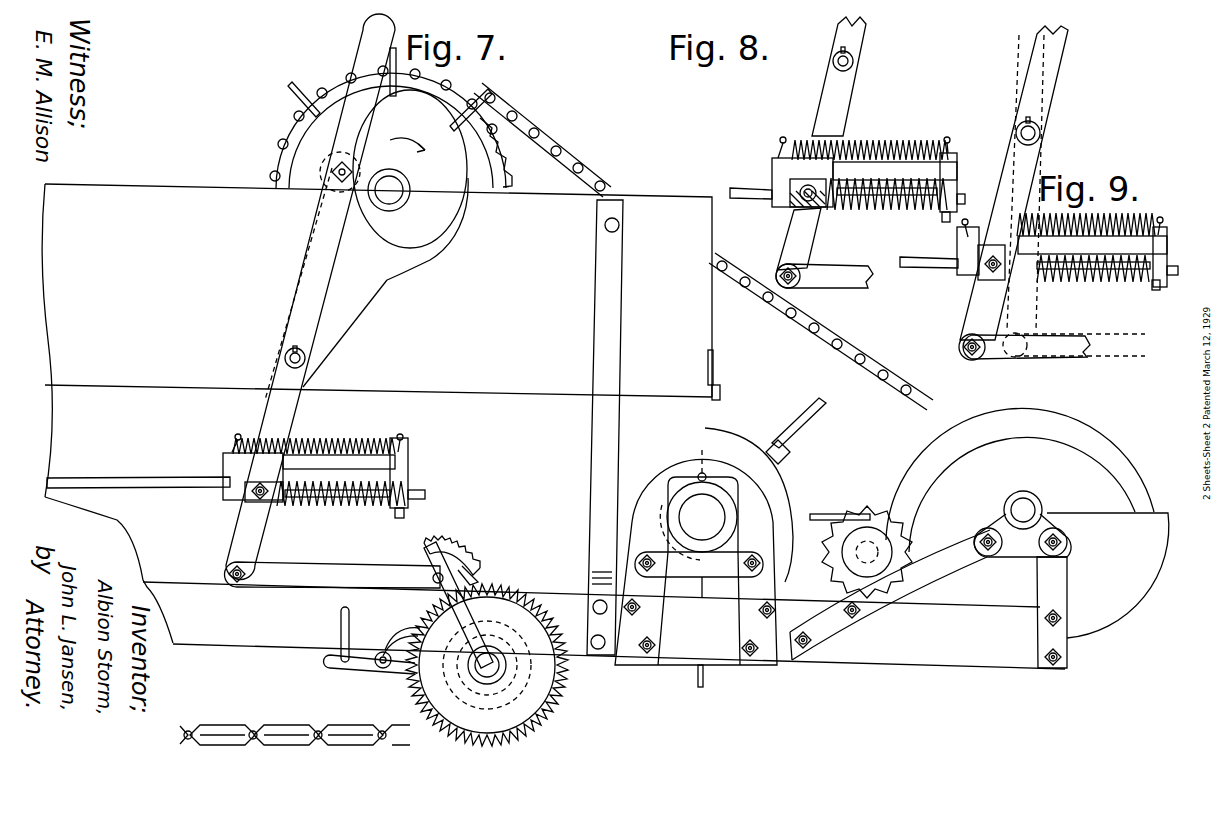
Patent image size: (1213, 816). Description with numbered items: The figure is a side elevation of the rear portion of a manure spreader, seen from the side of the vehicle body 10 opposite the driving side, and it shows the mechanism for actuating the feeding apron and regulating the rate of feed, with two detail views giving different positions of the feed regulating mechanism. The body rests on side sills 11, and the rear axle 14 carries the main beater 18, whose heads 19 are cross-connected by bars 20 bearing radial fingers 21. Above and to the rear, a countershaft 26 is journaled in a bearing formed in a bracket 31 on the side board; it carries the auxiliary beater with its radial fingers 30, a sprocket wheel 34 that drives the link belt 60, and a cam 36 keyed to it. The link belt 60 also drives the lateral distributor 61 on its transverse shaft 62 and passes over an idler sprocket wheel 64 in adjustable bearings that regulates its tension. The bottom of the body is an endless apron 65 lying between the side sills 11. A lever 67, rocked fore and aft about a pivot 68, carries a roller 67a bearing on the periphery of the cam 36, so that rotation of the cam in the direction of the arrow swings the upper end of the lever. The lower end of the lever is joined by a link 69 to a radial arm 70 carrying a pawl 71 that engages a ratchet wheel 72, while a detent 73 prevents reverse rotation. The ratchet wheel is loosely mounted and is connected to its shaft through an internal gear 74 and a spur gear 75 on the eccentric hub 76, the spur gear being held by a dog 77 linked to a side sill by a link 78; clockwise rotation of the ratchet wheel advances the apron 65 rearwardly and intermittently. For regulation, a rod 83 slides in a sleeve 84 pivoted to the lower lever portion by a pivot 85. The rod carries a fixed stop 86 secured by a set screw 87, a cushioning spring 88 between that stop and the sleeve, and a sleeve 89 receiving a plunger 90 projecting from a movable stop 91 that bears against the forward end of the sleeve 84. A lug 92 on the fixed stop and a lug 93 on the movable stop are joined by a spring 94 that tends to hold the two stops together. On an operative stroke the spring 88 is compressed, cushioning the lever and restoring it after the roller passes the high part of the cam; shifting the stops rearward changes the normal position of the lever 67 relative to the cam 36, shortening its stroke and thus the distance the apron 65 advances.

In FIG. 7, the vehicle body 10 is at (377, 324).
In FIG. 7, the side sills 11 is at (555, 586).
In FIG. 7, the rear axle 14 is at (687, 492).
In FIG. 7, the main beater 18 is at (797, 459).
In FIG. 7, the head 19 is at (720, 557).
In FIG. 7, the bars 20 is at (791, 423).
In FIG. 7, the radial fingers 21 is at (676, 427).
In FIG. 7, the countershaft 26 is at (397, 200).
In FIG. 7, the radial fingers 30 is at (495, 108).
In FIG. 7, the bracket 31 is at (354, 333).
In FIG. 7, the sprocket wheel 34 is at (415, 118).
In FIG. 7, the cam 36 is at (429, 185).
In FIG. 7, the link belt 60 is at (703, 294).
In FIG. 7, the lateral distributor 61 is at (1024, 480).
In FIG. 7, the transverse shaft 62 is at (979, 572).
In FIG. 7, the idler sprocket wheel 64 is at (850, 552).
In FIG. 7, the endless apron 65 is at (295, 717).
In FIG. 7, the lever 67 is at (310, 297).
In FIG. 8, the lever 67 is at (831, 143).
In FIG. 9, the lever 67 is at (1052, 191).
In FIG. 7, the roller 67a is at (301, 193).
In FIG. 7, the pivot 68 is at (270, 355).
In FIG. 8, the pivot 68 is at (862, 76).
In FIG. 9, the pivot 68 is at (1050, 133).
In FIG. 7, the link 69 is at (332, 562).
In FIG. 8, the link 69 is at (824, 261).
In FIG. 9, the link 69 is at (1030, 332).
In FIG. 7, the radial arm 70 is at (479, 605).
In FIG. 7, the pawl 71 is at (467, 556).
In FIG. 7, the ratchet wheel 72 is at (487, 657).
In FIG. 7, the detent 73 is at (397, 635).
In FIG. 7, the internal gear 74 is at (465, 703).
In FIG. 7, the spur gear 75 is at (487, 691).
In FIG. 7, the eccentric hub 76 is at (492, 708).
In FIG. 7, the dog 77 is at (369, 677).
In FIG. 7, the link 78 is at (321, 641).
In FIG. 7, the rod 83 is at (138, 469).
In FIG. 8, the rod 83 is at (743, 177).
In FIG. 9, the rod 83 is at (929, 278).
In FIG. 7, the sleeve 84 is at (236, 473).
In FIG. 8, the sleeve 84 is at (788, 206).
In FIG. 9, the sleeve 84 is at (963, 256).
In FIG. 7, the pivot 85 is at (236, 511).
In FIG. 8, the pivot 85 is at (780, 219).
In FIG. 9, the pivot 85 is at (969, 286).
In FIG. 7, the fixed stop 86 is at (428, 500).
In FIG. 8, the fixed stop 86 is at (974, 188).
In FIG. 9, the fixed stop 86 is at (1172, 291).
In FIG. 7, the set screw 87 is at (398, 525).
In FIG. 8, the set screw 87 is at (929, 220).
In FIG. 9, the set screw 87 is at (1144, 298).
In FIG. 7, the cushioning spring 88 is at (341, 506).
In FIG. 8, the cushioning spring 88 is at (887, 210).
In FIG. 9, the cushioning spring 88 is at (1093, 281).
In FIG. 7, the sleeve 89 is at (366, 469).
In FIG. 8, the sleeve 89 is at (887, 209).
In FIG. 9, the sleeve 89 is at (1093, 285).
In FIG. 7, the plunger 90 is at (421, 473).
In FIG. 8, the plunger 90 is at (966, 177).
In FIG. 9, the plunger 90 is at (1103, 241).
In FIG. 7, the movable stop 91 is at (231, 476).
In FIG. 8, the movable stop 91 is at (789, 174).
In FIG. 9, the movable stop 91 is at (943, 272).
In FIG. 7, the lug 92 is at (417, 435).
In FIG. 8, the lug 92 is at (960, 139).
In FIG. 9, the lug 92 is at (1155, 215).
In FIG. 7, the lug 93 is at (223, 434).
In FIG. 8, the lug 93 is at (777, 136).
In FIG. 9, the lug 93 is at (977, 214).
In FIG. 7, the spring 94 is at (314, 438).
In FIG. 8, the spring 94 is at (874, 148).
In FIG. 9, the spring 94 is at (1092, 225).